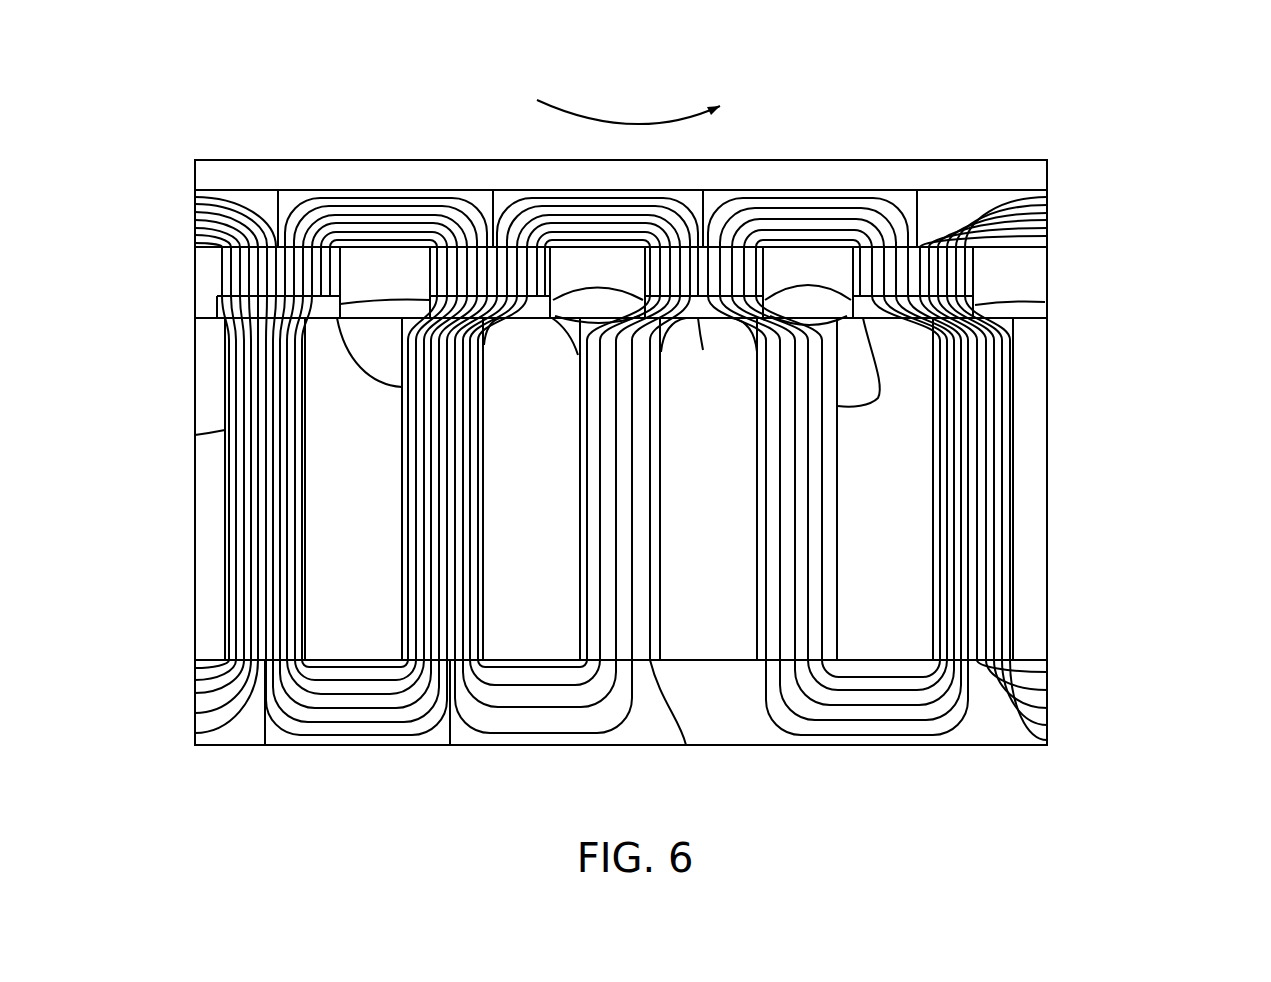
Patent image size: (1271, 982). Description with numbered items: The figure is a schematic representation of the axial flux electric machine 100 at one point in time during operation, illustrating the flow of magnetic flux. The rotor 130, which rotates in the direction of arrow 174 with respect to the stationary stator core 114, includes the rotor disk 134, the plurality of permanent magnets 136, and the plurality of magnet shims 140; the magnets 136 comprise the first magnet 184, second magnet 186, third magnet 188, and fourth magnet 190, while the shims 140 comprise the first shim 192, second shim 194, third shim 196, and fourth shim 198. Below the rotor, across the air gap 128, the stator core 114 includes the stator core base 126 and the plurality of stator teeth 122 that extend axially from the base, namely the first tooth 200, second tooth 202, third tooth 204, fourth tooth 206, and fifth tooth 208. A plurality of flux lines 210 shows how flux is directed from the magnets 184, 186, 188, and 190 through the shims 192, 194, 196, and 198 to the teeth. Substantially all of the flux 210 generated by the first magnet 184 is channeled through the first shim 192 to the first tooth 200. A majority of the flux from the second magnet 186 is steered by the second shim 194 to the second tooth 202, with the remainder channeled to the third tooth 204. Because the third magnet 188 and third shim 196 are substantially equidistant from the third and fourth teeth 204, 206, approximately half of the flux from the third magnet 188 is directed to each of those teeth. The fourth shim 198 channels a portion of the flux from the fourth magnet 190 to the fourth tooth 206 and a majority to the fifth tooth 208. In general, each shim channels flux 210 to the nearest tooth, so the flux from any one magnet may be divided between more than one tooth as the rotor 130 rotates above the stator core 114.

The axial flux electric machine 100 is at (1160, 130).
The stator core 114 is at (248, 755).
The stator teeth 122 is at (1070, 540).
The stator core base 126 is at (752, 722).
The air gap 128 is at (1005, 316).
The rotor 130 is at (160, 218).
The rotor disk 134 is at (925, 200).
The permanent magnets 136 is at (190, 267).
The magnet shims 140 is at (185, 318).
The arrow 174 is at (628, 94).
The first magnet 184 is at (330, 258).
The second magnet 186 is at (548, 263).
The third magnet 188 is at (768, 270).
The fourth magnet 190 is at (968, 263).
The first shim 192 is at (318, 318).
The second shim 194 is at (527, 318).
The third shim 196 is at (705, 318).
The fourth shim 198 is at (873, 320).
The first tooth 200 is at (258, 476).
The second tooth 202 is at (458, 462).
The third tooth 204 is at (635, 462).
The fourth tooth 206 is at (828, 462).
The fifth tooth 208 is at (1000, 462).
The flux lines 210 is at (815, 217).